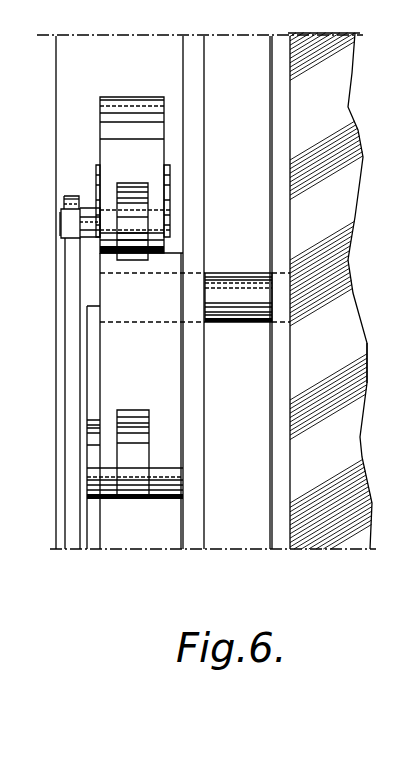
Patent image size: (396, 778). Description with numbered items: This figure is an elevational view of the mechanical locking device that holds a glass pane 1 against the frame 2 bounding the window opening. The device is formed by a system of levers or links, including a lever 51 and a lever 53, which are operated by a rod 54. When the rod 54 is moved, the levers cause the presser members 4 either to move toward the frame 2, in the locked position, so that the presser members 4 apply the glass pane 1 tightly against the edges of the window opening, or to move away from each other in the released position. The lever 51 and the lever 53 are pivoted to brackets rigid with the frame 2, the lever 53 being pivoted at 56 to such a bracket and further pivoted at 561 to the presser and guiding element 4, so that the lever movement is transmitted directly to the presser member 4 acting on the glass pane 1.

The glass pane 1 is at (333, 115).
The frame 2 is at (381, 363).
The presser member 4 is at (282, 43).
The lever 51 is at (126, 112).
The lever 53 is at (168, 378).
The rod 54 is at (68, 255).
The pivot 56 is at (100, 430).
The pivot 561 is at (238, 286).